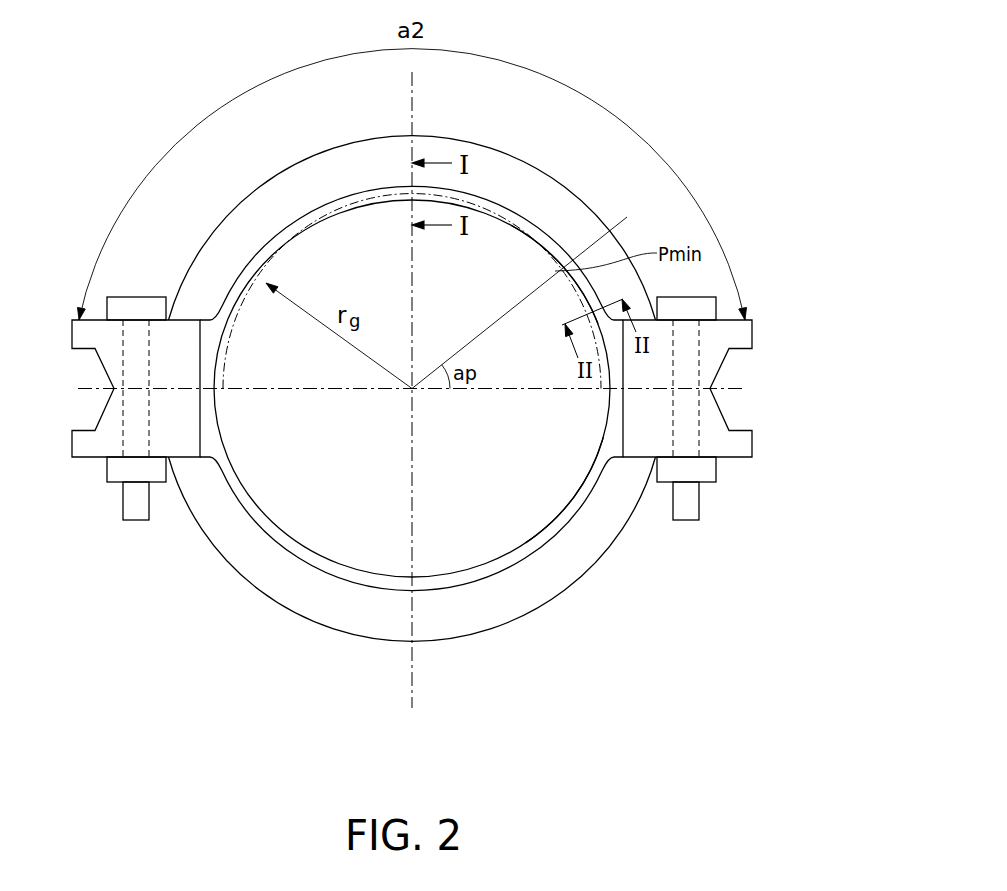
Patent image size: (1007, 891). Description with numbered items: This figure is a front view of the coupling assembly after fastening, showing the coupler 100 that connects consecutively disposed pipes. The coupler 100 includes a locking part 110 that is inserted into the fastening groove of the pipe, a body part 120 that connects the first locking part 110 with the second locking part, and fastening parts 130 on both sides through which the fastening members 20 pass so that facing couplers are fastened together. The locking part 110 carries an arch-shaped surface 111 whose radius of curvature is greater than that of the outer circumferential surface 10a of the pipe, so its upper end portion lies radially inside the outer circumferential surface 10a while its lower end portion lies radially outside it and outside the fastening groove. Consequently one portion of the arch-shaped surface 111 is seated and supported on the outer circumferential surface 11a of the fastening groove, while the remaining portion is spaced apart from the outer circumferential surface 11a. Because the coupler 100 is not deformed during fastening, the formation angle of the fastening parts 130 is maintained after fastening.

The coupler 100 is at (448, 440).
The locking part 110 is at (500, 203).
The body part 120 is at (567, 204).
The fastening part 130 is at (708, 428).
The fastening member 20 is at (137, 298).
The outer circumferential surface of the pipe 10a is at (535, 242).
The outer circumferential surface of the fastening groove 11a is at (577, 298).
The arch-shaped surface 111 is at (597, 452).